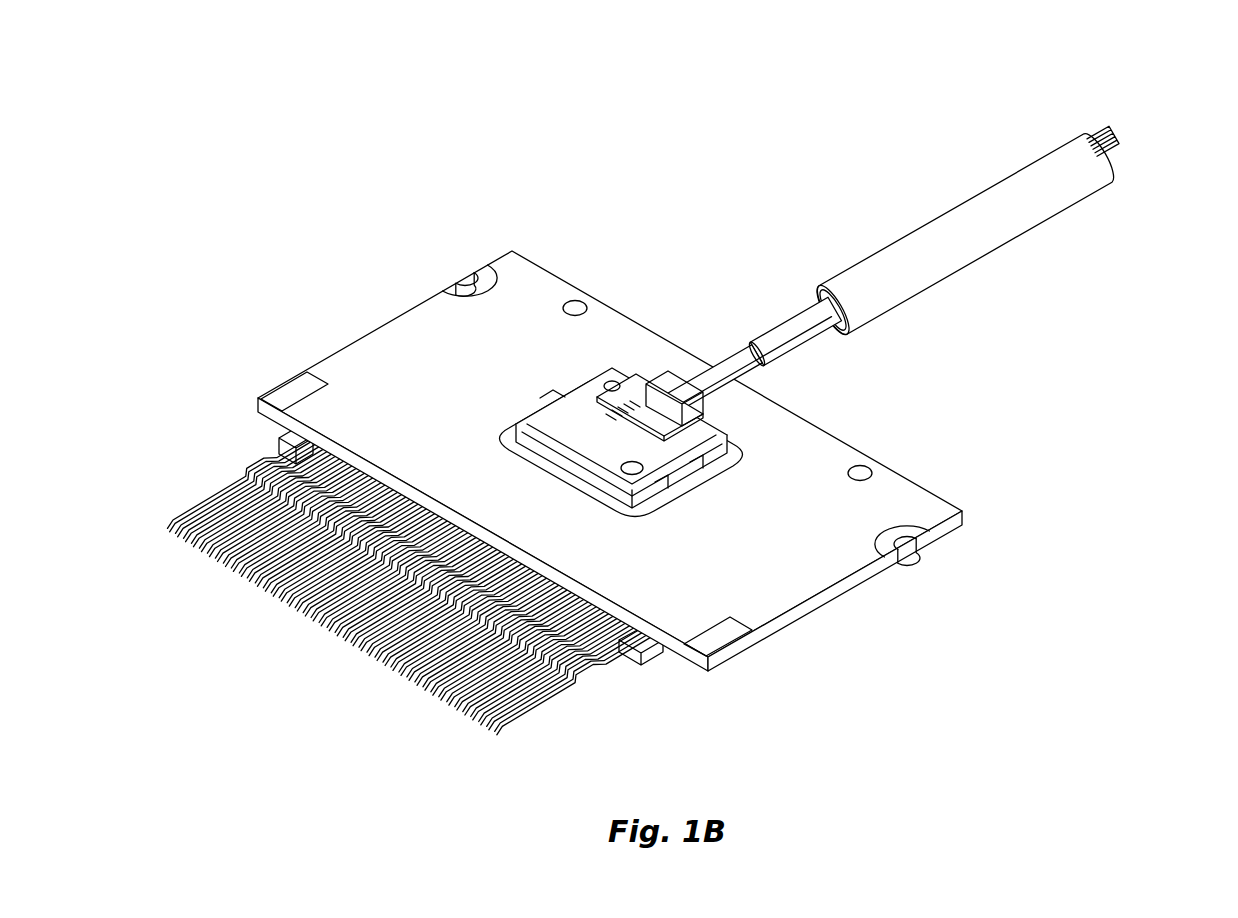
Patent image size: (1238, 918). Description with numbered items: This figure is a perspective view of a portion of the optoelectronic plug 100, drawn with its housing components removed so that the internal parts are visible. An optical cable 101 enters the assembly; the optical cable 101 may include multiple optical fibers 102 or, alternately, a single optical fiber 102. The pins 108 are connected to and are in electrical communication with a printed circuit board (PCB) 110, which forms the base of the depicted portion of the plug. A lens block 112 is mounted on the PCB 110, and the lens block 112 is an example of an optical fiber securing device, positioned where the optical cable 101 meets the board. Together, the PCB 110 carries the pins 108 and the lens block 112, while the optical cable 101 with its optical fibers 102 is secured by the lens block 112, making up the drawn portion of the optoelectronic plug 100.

The optoelectronic plug 100 is at (250, 108).
The optical cable 101 is at (785, 314).
The optical fibers 102 is at (1130, 157).
The pins 108 is at (362, 677).
The printed circuit board 110 is at (733, 563).
The lens block 112 is at (527, 420).